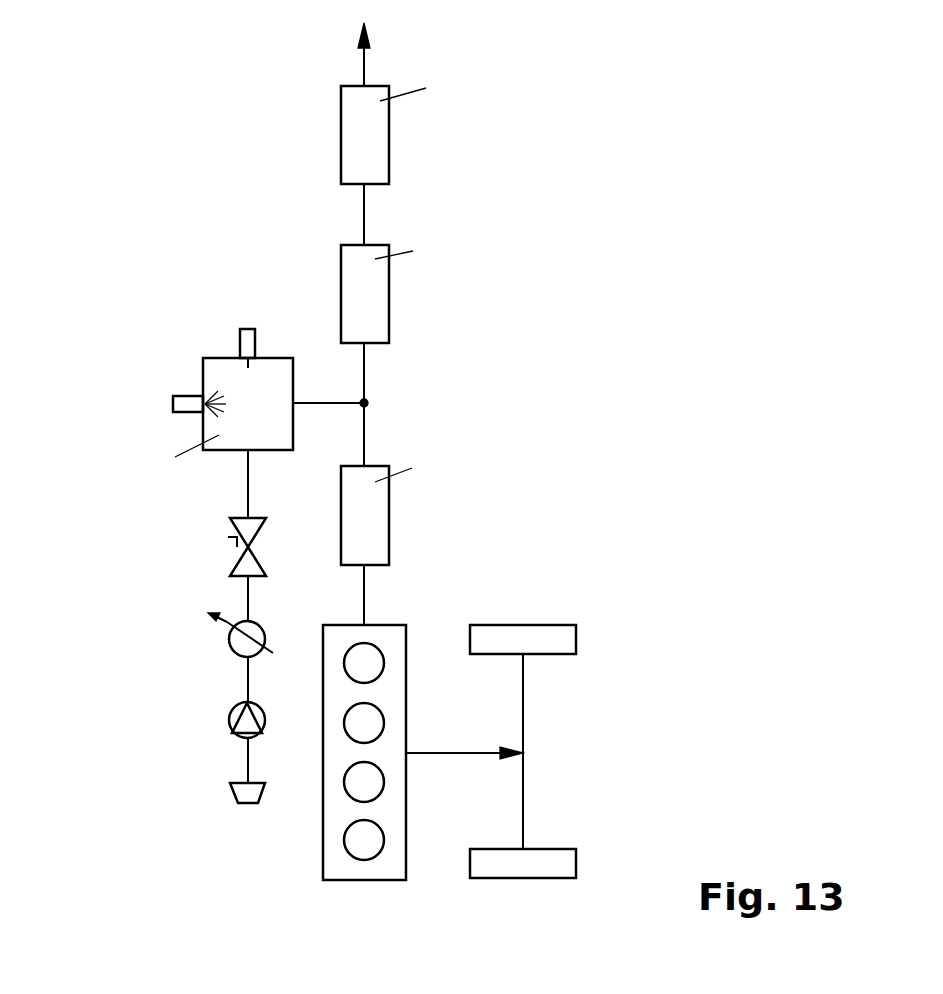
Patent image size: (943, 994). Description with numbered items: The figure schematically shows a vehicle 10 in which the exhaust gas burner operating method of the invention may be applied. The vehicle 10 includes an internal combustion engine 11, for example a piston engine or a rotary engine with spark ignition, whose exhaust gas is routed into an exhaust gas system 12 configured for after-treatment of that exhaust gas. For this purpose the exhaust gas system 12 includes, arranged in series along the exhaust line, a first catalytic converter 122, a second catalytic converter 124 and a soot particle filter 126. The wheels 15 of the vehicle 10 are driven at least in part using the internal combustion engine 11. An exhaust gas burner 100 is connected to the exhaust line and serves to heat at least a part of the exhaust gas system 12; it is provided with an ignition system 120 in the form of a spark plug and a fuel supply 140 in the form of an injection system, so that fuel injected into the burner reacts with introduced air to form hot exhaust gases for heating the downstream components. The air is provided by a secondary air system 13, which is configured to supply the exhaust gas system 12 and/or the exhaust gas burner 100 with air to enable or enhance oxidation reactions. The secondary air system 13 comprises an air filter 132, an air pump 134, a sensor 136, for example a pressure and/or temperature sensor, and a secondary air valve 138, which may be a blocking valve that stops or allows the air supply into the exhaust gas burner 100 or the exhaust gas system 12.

The vehicle 10 is at (150, 140).
The internal combustion engine 11 is at (406, 700).
The exhaust gas system 12 is at (405, 545).
The secondary air system 13 is at (85, 805).
The wheels 15 is at (608, 778).
The exhaust gas burner 100 is at (203, 370).
The ignition system 120 is at (245, 329).
The catalytic converter 122 is at (389, 514).
The catalytic converter 124 is at (389, 292).
The soot particle filter 126 is at (389, 133).
The air filter 132 is at (228, 794).
The air pump 134 is at (228, 722).
The sensor 136 is at (228, 642).
The secondary air valve 138 is at (228, 540).
The fuel supply 140 is at (173, 402).